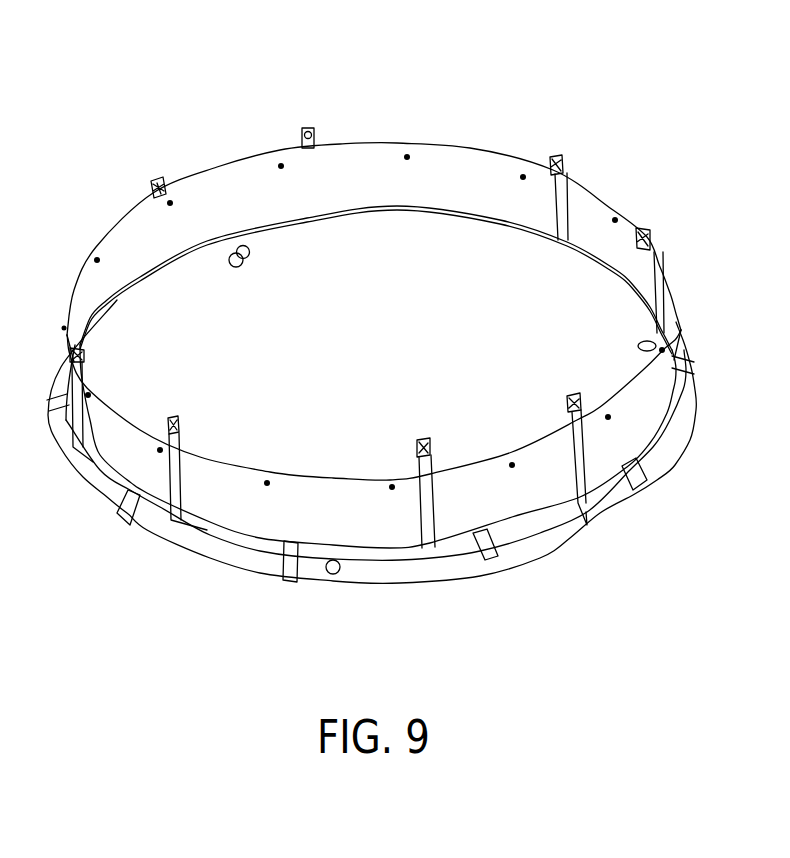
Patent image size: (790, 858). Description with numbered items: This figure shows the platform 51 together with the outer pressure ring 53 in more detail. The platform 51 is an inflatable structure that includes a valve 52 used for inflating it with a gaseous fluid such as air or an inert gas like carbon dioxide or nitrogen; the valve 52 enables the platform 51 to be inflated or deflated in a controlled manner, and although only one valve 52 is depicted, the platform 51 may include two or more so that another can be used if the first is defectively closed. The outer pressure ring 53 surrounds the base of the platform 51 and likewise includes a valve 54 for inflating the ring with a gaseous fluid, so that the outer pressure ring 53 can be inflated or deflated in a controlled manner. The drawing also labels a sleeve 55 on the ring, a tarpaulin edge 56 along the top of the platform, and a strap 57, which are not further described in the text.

The platform 51 is at (418, 233).
The valve 52 is at (237, 247).
The outer pressure ring 53 is at (148, 522).
The valve 54 is at (333, 575).
The Sleeve 55 is at (493, 557).
The Tarpaulin Edge 56 is at (583, 184).
The Strap 57 is at (588, 527).